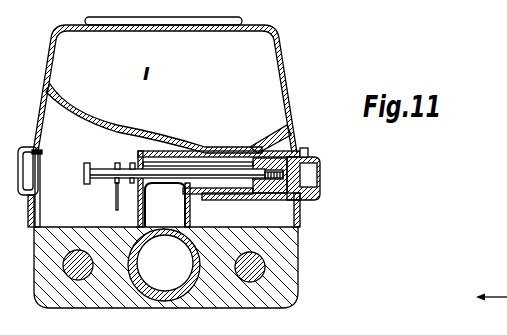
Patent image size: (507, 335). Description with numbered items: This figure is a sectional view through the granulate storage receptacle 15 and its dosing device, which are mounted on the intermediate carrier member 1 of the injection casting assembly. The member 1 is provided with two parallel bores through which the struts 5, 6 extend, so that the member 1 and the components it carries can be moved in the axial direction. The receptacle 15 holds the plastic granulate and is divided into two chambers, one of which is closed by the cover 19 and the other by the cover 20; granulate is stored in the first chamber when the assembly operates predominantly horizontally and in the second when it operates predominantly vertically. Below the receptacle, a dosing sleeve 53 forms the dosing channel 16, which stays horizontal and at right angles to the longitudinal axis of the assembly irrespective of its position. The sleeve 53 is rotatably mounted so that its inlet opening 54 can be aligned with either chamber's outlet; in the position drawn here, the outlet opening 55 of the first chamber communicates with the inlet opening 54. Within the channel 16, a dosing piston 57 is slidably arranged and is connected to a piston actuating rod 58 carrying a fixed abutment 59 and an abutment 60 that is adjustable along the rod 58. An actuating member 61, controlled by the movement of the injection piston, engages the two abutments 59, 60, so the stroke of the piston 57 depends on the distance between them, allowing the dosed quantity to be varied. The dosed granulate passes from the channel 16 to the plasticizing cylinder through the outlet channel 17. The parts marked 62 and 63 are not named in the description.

The intermediate carrier member 1 is at (104, 300).
The strut 5 is at (58, 305).
The strut 6 is at (266, 266).
The granulate storage receptacle 15 is at (284, 52).
The dosing channel 16 is at (175, 163).
The outlet channel 17 is at (178, 215).
The cover 19 is at (239, 20).
The cover 20 is at (294, 332).
The dosing sleeve 53 is at (306, 149).
The inlet opening 54 is at (225, 147).
The outlet opening 55 is at (250, 147).
The dosing piston 57 is at (276, 193).
The piston actuating rod 58 is at (228, 178).
The fixed abutment 59 is at (87, 184).
The adjustable abutment 60 is at (133, 183).
The actuating member 61 is at (116, 195).
The nut 62 is at (321, 182).
The retaining clip 63 is at (41, 152).